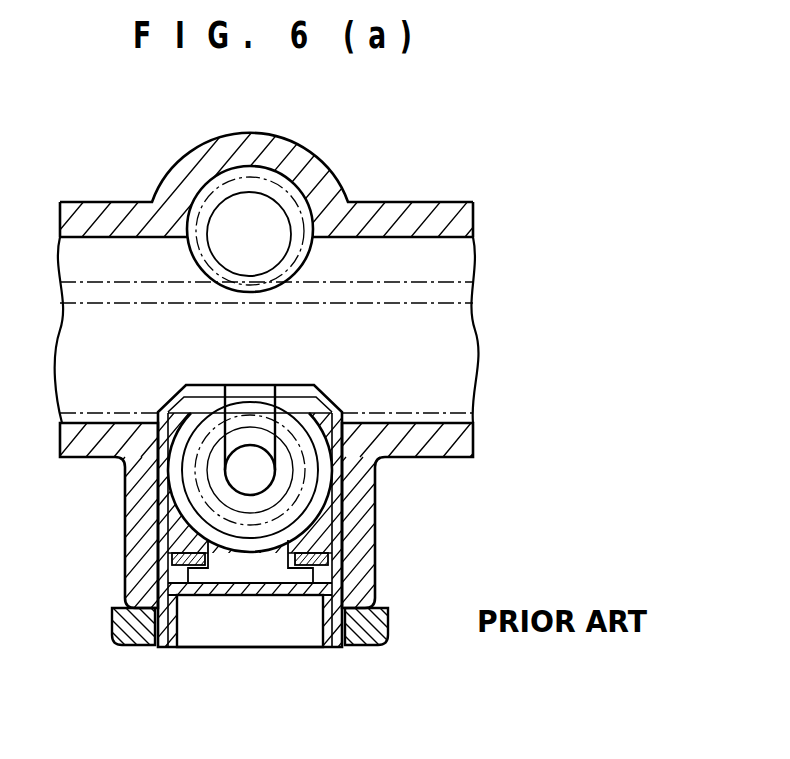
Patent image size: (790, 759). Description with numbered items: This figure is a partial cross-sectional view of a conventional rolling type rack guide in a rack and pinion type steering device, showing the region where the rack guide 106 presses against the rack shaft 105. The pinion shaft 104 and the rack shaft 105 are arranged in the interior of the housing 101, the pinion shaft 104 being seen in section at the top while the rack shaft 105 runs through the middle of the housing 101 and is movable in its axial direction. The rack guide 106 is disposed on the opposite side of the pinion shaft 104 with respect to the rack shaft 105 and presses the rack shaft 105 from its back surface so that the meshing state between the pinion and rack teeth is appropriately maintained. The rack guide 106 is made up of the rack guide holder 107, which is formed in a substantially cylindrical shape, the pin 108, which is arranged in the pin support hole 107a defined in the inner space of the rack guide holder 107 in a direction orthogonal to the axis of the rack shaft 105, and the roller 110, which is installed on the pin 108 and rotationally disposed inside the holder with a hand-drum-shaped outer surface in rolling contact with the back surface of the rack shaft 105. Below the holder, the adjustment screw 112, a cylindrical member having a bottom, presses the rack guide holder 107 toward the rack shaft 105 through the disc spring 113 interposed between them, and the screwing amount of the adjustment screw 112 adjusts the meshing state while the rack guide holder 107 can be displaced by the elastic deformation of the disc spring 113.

The housing 101 is at (420, 215).
The pinion shaft 104 is at (228, 225).
The rack shaft 105 is at (453, 365).
The rack guide 106 is at (150, 516).
The pin support hole 107a is at (235, 438).
The rack guide holder 107 is at (176, 558).
The pin 108 is at (268, 476).
The roller 110 is at (276, 497).
The adjustment screw 112 is at (313, 595).
The disc spring 113 is at (197, 595).